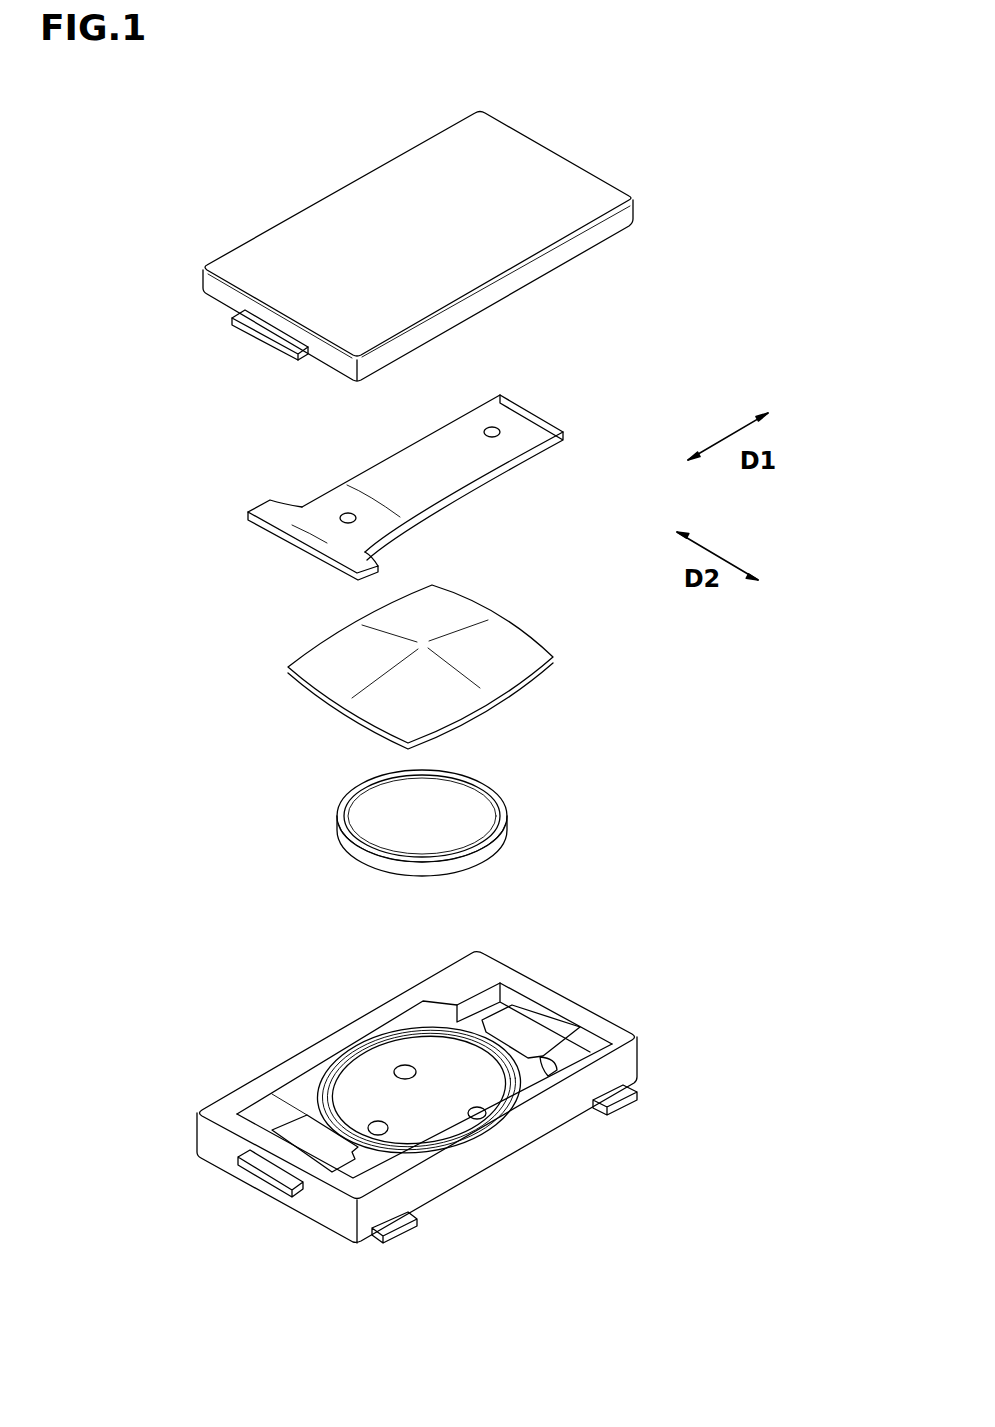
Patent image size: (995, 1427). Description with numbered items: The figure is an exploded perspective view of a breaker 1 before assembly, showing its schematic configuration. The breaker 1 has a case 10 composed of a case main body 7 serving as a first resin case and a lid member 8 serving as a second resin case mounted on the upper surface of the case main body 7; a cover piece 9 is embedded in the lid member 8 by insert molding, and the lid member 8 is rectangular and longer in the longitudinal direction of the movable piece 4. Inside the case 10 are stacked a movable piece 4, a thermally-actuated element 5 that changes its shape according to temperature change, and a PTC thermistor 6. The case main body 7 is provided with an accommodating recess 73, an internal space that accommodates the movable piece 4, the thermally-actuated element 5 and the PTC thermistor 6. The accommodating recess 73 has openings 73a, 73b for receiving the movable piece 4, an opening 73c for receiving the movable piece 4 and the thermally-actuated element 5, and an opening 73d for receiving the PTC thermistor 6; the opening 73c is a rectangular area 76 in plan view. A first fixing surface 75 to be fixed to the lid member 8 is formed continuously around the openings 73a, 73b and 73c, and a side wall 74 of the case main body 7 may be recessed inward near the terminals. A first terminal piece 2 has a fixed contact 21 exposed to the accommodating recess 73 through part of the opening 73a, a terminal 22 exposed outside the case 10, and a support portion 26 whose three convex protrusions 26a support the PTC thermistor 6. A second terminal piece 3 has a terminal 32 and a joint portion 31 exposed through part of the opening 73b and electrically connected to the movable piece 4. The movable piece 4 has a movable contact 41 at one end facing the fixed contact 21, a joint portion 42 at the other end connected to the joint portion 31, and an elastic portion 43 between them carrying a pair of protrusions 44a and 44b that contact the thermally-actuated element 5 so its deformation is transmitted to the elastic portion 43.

The breaker 1 is at (722, 86).
The first terminal piece 2 is at (625, 1006).
The second terminal piece 3 is at (339, 1173).
The movable piece 4 is at (395, 472).
The thermally-actuated element 5 is at (497, 652).
The PTC thermistor 6 is at (462, 815).
The case main body 7 is at (422, 1103).
The lid member 8 is at (483, 147).
The cover piece 9 is at (243, 334).
The case 10 is at (422, 690).
The fixed contact 21 is at (510, 1022).
The terminal 22 is at (645, 1108).
The support portion 26 is at (370, 1103).
The protrusions 26a is at (424, 1112).
The joint portion 31 is at (292, 1138).
The terminal 32 is at (405, 1242).
The movable contact 41 is at (558, 450).
The joint portion 42 is at (250, 511).
The elastic portion 43 is at (440, 470).
The protrusion 44a is at (345, 512).
The protrusion 44b is at (495, 430).
The accommodating recess 73 is at (377, 1077).
The opening 73a is at (537, 1040).
The opening 73b is at (300, 1120).
The opening 73c is at (421, 1090).
The opening 73d is at (318, 1143).
The side wall 74 is at (552, 1112).
The first fixing surface 75 is at (603, 1037).
The rectangular area 76 is at (419, 1036).